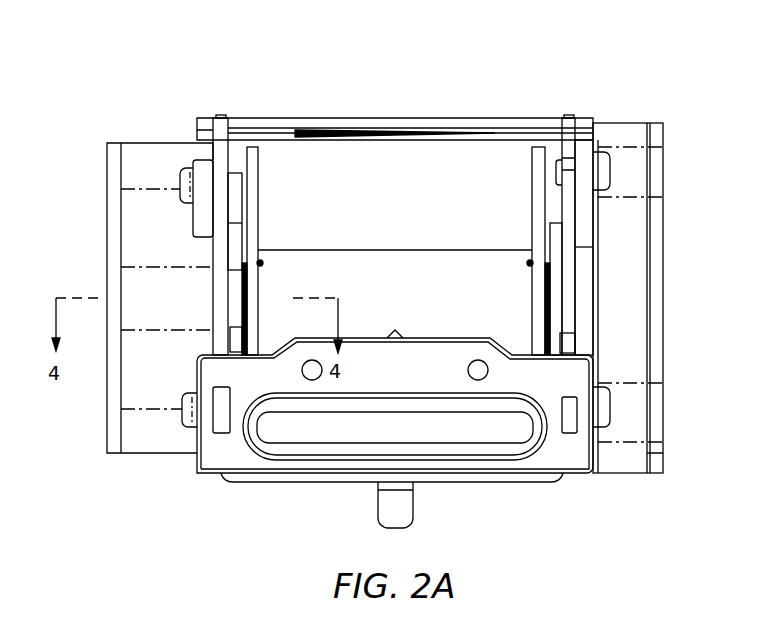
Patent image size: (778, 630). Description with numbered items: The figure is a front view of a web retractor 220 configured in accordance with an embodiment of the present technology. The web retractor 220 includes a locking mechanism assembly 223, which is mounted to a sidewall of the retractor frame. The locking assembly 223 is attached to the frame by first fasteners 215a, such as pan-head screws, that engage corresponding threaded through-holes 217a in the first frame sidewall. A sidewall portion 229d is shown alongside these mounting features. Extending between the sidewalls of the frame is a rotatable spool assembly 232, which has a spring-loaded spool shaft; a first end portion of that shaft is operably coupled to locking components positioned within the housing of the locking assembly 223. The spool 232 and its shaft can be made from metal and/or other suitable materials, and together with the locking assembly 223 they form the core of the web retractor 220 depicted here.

The web retractor 220 is at (636, 72).
The locking mechanism assembly 223 is at (113, 218).
The first fastener 215a is at (185, 182).
The support post 229d is at (220, 143).
The threaded through-hole 217a is at (232, 177).
The rotatable spool assembly 232 is at (258, 173).